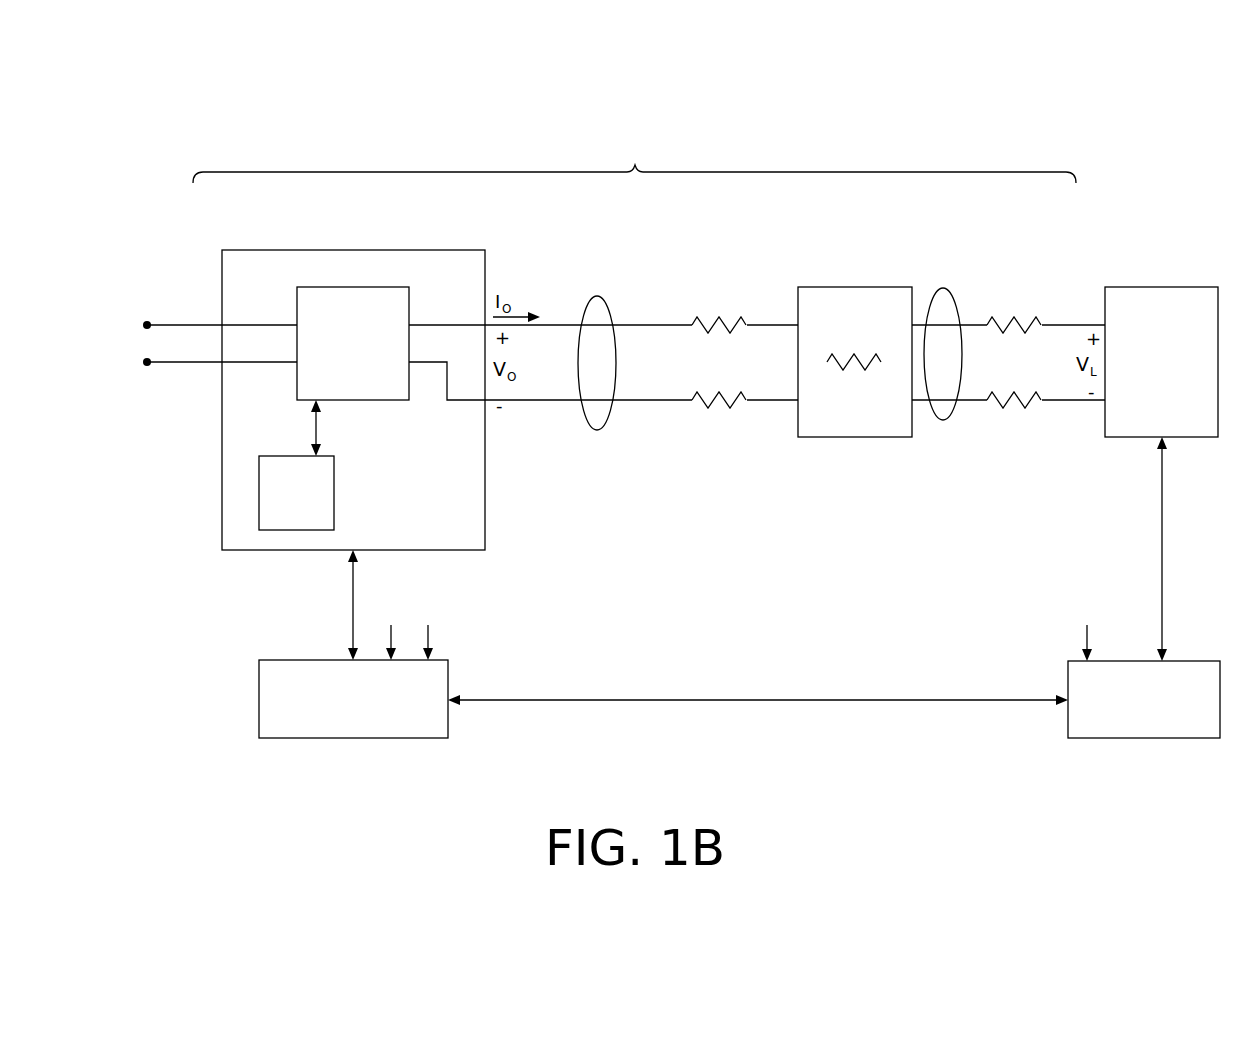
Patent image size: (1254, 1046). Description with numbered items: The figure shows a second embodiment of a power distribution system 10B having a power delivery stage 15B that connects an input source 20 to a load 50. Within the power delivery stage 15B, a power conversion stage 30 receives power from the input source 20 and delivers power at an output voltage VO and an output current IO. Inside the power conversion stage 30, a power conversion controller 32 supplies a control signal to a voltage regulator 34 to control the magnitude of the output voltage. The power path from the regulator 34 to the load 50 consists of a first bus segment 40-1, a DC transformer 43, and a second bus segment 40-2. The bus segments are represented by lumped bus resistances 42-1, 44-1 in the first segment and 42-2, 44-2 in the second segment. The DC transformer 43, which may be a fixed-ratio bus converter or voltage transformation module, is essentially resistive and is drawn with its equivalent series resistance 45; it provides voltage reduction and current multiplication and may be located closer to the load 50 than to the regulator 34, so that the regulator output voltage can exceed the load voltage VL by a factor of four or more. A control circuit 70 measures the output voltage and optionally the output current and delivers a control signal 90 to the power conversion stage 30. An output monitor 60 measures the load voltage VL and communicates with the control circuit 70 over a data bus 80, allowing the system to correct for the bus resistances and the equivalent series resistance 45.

The power distribution system 10B is at (1042, 76).
The power delivery stage 15B is at (634, 156).
The input source 20 is at (118, 315).
The power conversion stage 30 is at (232, 259).
The power conversion controller 32 is at (326, 466).
The voltage regulator 34 is at (306, 297).
The bus segment 40-1 is at (597, 305).
The bus segment 40-2 is at (944, 296).
The lumped bus resistance 42-1 is at (700, 316).
The lumped bus resistance 44-1 is at (700, 391).
The lumped bus resistance 42-2 is at (1017, 315).
The lumped bus resistance 44-2 is at (1016, 391).
The DC transformer 43 is at (840, 287).
The equivalent series resistance 45 is at (822, 382).
The load 50 is at (1208, 297).
The output monitor 60 is at (1210, 672).
The control circuit 70 is at (268, 672).
The data bus 80 is at (660, 698).
The control signal 90 is at (350, 604).